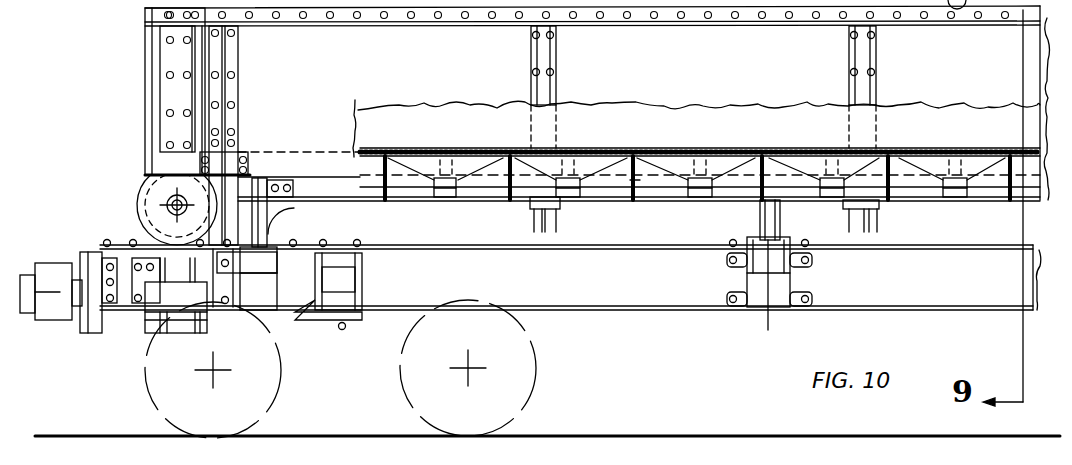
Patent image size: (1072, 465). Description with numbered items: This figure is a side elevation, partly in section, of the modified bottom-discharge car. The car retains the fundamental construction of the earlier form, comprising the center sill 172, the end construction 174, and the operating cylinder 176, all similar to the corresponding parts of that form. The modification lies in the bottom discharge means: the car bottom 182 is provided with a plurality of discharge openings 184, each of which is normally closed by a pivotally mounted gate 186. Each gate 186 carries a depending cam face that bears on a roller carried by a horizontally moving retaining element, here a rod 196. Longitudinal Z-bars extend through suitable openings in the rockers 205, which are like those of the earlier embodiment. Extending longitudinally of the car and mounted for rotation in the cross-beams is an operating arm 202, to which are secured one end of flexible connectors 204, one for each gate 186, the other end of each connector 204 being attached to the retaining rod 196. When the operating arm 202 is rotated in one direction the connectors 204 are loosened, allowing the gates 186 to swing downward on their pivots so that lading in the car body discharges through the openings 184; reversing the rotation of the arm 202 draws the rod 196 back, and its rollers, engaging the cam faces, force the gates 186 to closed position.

The center sill 172 is at (526, 287).
The end construction 174 is at (180, 95).
The operating cylinder 176 is at (157, 210).
The car bottom 182 is at (385, 142).
The discharge openings 184 is at (500, 133).
The gate 186 is at (443, 140).
The retaining rod 196 is at (612, 187).
The operating arm 202 is at (493, 198).
The flexible connectors 204 is at (440, 200).
The rockers 205 is at (262, 222).